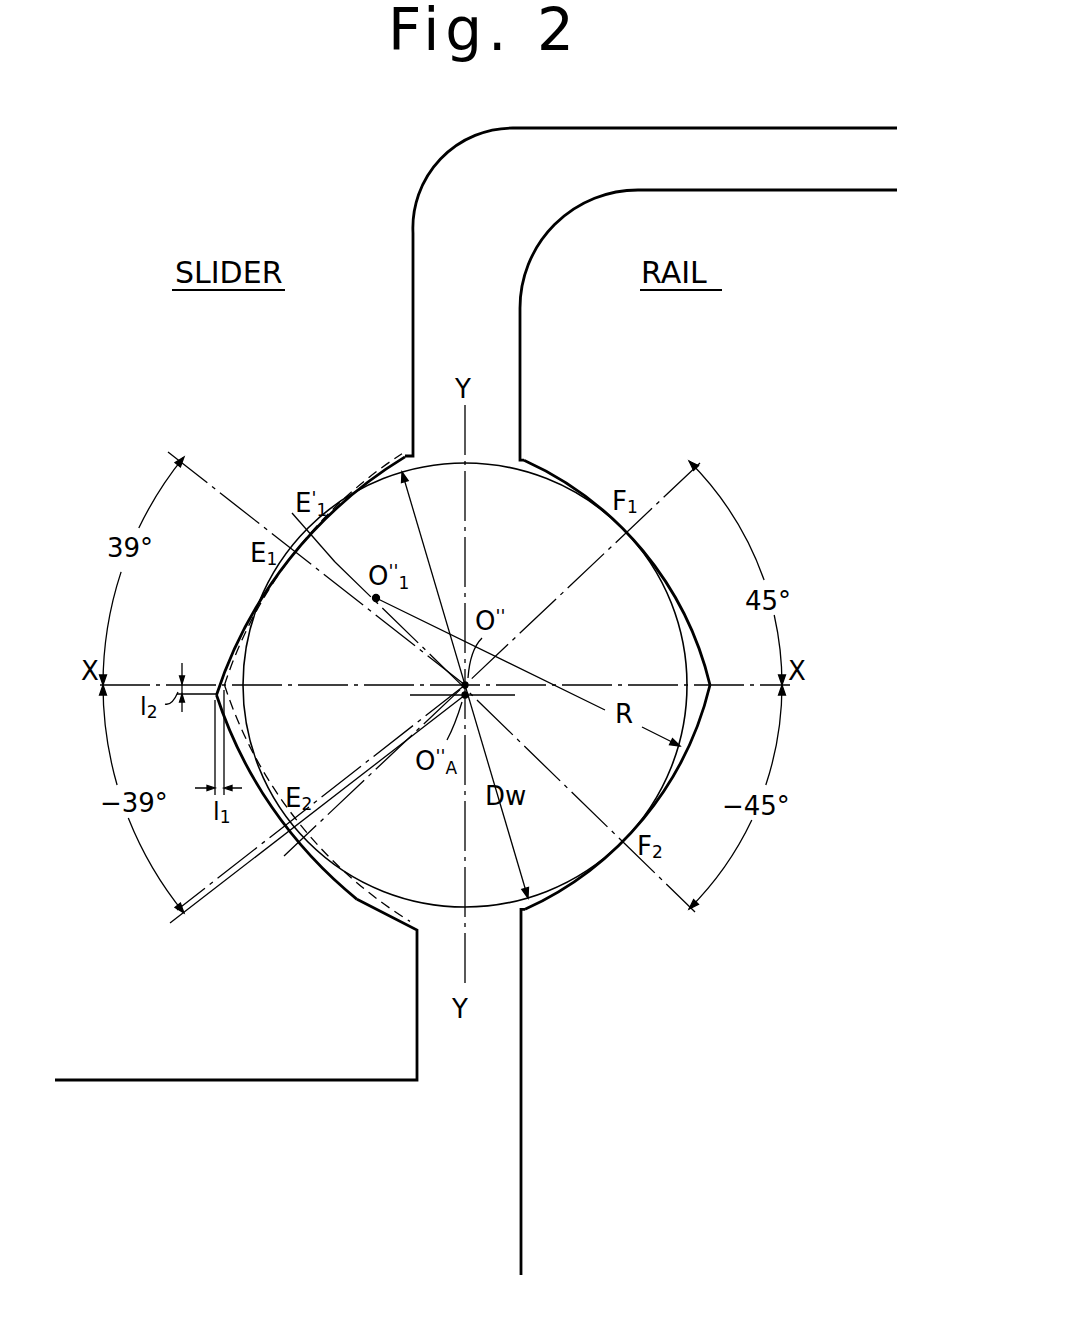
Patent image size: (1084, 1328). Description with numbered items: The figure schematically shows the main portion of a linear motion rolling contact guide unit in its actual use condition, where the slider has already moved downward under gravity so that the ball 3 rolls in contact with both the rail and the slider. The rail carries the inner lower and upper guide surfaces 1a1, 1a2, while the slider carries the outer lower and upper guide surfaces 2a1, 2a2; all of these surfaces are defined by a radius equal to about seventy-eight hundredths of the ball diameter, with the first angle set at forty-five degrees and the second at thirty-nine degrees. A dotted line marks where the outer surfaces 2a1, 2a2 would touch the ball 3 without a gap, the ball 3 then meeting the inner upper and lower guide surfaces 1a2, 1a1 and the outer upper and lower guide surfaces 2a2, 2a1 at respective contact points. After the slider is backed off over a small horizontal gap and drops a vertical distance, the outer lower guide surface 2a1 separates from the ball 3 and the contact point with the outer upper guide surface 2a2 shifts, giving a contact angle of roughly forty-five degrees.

The ball 3 is at (495, 890).
The outer lower guide surface 2a1 is at (352, 888).
The outer upper guide surface 2a2 is at (266, 585).
The inner lower guide surface 1a1 is at (603, 863).
The inner upper guide surface 1a2 is at (665, 578).